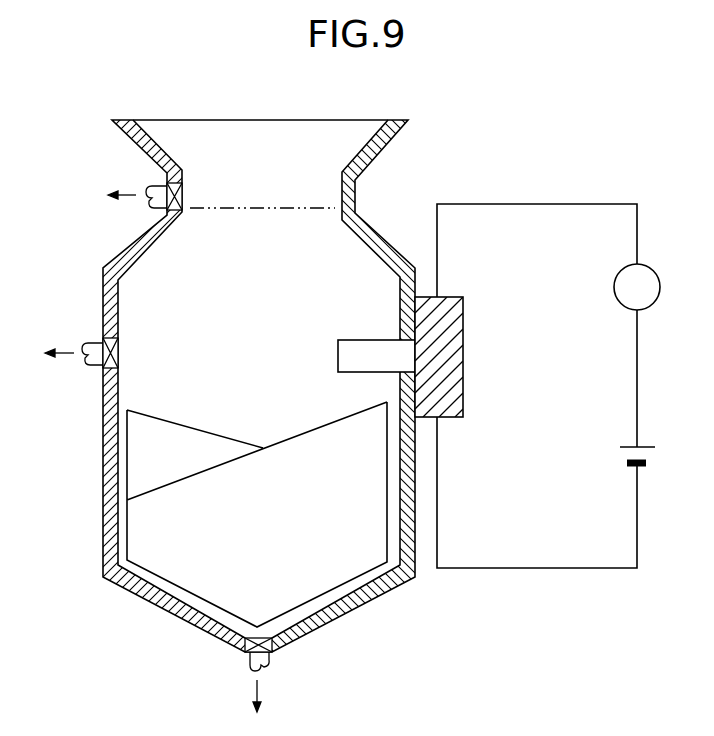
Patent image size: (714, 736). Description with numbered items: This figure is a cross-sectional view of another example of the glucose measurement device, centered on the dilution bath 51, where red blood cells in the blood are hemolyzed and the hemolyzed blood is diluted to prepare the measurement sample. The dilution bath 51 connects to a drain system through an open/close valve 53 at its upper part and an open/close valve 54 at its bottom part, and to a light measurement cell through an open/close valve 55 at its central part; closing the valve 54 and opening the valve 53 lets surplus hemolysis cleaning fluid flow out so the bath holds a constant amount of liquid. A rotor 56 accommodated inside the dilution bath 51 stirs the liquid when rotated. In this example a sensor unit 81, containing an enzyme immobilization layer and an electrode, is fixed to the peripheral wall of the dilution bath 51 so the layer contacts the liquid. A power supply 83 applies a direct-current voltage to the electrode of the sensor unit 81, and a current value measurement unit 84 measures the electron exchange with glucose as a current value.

The dilution bath 51 is at (103, 306).
The open/close valve 53 is at (184, 197).
The open/close valve 54 is at (245, 657).
The open/close valve 55 is at (120, 352).
The rotor 56 is at (330, 575).
The sensor unit 81 is at (355, 353).
The power supply 83 is at (622, 455).
The current value measurement unit 84 is at (613, 287).